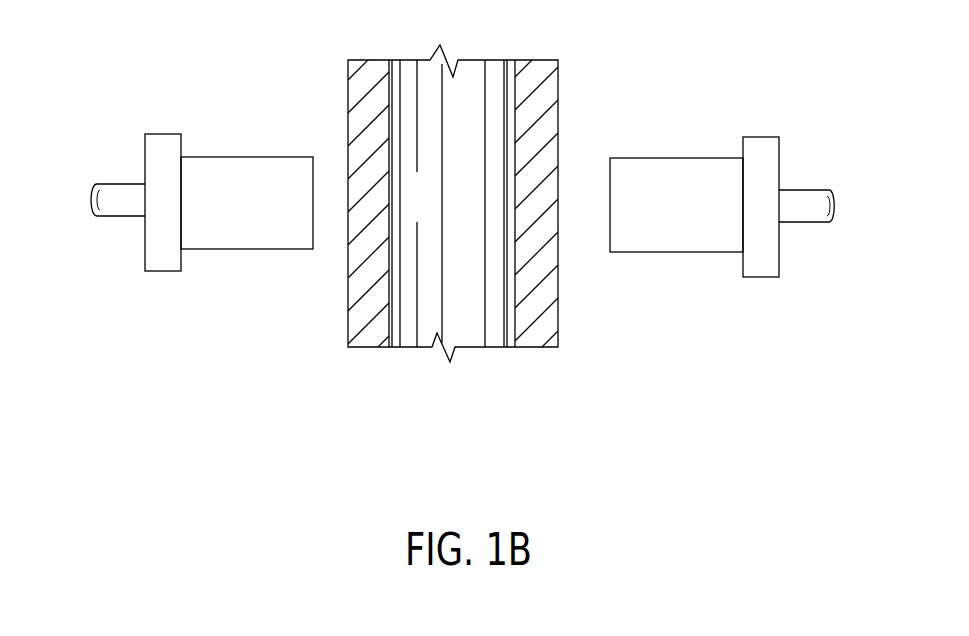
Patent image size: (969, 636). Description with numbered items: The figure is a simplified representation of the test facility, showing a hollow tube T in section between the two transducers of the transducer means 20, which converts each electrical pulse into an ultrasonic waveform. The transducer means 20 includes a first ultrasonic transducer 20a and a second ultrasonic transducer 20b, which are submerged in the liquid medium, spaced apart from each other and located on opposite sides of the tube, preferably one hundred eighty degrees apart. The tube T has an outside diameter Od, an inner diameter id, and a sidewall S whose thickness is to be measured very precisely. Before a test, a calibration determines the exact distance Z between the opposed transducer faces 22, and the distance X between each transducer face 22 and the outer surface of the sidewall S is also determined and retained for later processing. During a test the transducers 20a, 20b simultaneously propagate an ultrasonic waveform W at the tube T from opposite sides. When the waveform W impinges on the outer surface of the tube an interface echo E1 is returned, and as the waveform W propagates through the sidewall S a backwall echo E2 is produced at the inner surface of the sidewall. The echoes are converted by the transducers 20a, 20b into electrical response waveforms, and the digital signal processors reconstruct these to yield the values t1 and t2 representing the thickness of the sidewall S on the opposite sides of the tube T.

The transducer means 20 is at (190, 157).
The first ultrasonic transducer 20a is at (216, 218).
The second ultrasonic transducer 20b is at (650, 221).
The transducer face 22 is at (314, 249).
The hollow tube T is at (568, 329).
The sidewall S is at (344, 341).
The ultrasonic waveform W is at (323, 204).
The interface echo E1 is at (350, 227).
The backwall echo E2 is at (333, 183).
The distance x X is at (643, 33).
The distance z Z is at (612, 113).
The sidewall thickness value t1 is at (420, 382).
The sidewall thickness value t2 is at (558, 465).
The inner diameter id is at (453, 384).
The outside diameter Od is at (602, 448).